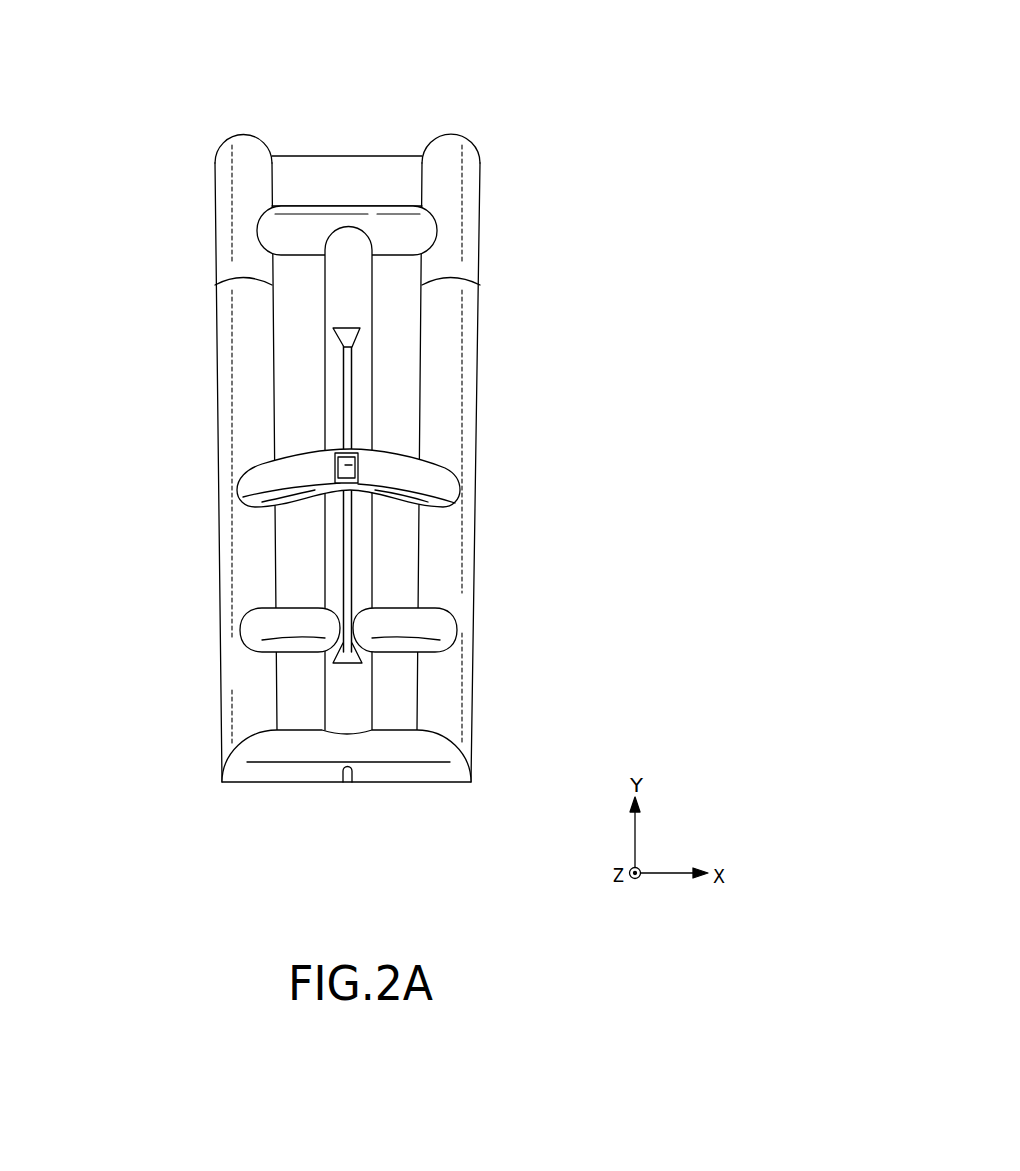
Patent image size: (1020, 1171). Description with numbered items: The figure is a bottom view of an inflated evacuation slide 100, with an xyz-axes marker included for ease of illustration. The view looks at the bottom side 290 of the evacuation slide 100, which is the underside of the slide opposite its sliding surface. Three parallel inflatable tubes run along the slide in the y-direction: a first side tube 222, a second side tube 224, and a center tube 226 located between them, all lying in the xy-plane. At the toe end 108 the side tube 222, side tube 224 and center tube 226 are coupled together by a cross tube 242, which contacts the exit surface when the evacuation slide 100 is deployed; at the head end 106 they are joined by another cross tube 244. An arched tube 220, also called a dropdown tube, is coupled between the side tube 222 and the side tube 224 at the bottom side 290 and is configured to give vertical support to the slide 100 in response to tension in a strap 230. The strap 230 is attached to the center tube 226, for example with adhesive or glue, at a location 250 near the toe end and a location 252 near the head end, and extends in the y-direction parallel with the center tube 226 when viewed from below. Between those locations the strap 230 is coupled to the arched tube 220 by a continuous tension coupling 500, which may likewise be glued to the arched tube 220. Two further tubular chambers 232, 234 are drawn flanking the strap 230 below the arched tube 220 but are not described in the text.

The evacuation slide 100 is at (565, 103).
The head end 106 is at (371, 102).
The toe end 108 is at (338, 797).
The arched tube 220 is at (401, 471).
The side tube 222 is at (457, 386).
The side tube 224 is at (250, 349).
The center tube 226 is at (365, 363).
The strap 230 is at (352, 530).
The right lower chamber 232 is at (417, 623).
The left lower chamber 234 is at (278, 632).
The cross tube 242 is at (398, 752).
The cross tube 244 is at (415, 221).
The location 250 is at (322, 665).
The location 252 is at (368, 330).
The bottom side 290 is at (272, 426).
The continuous tension coupling 500 is at (336, 463).